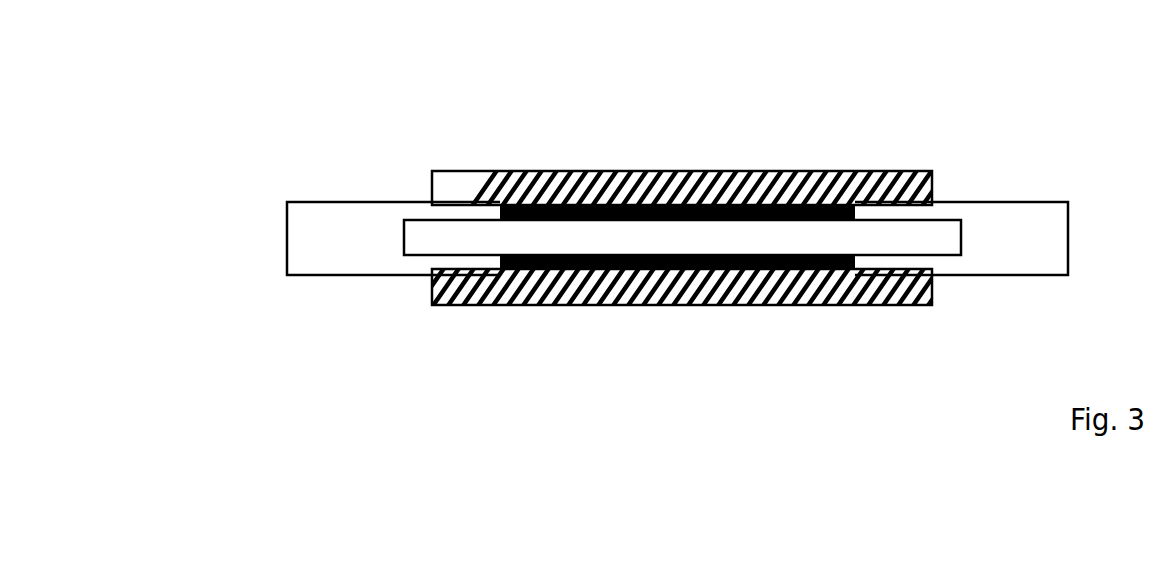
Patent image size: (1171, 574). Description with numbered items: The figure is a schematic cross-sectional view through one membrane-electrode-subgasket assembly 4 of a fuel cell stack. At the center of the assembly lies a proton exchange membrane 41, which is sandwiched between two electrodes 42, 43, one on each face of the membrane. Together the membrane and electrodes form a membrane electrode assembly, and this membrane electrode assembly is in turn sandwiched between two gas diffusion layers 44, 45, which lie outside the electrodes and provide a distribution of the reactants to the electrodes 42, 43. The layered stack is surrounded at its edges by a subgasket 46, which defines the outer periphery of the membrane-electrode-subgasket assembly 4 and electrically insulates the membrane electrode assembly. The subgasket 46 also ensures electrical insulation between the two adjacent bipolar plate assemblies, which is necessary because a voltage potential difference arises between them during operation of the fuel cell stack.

The membrane-electrode-subgasket assembly 4 is at (498, 83).
The proton exchange membrane 41 is at (933, 237).
The electrode 42 is at (820, 207).
The electrode 43 is at (828, 271).
The gas diffusion layer 44 is at (683, 177).
The gas diffusion layer 45 is at (694, 290).
The subgasket 46 is at (1047, 238).